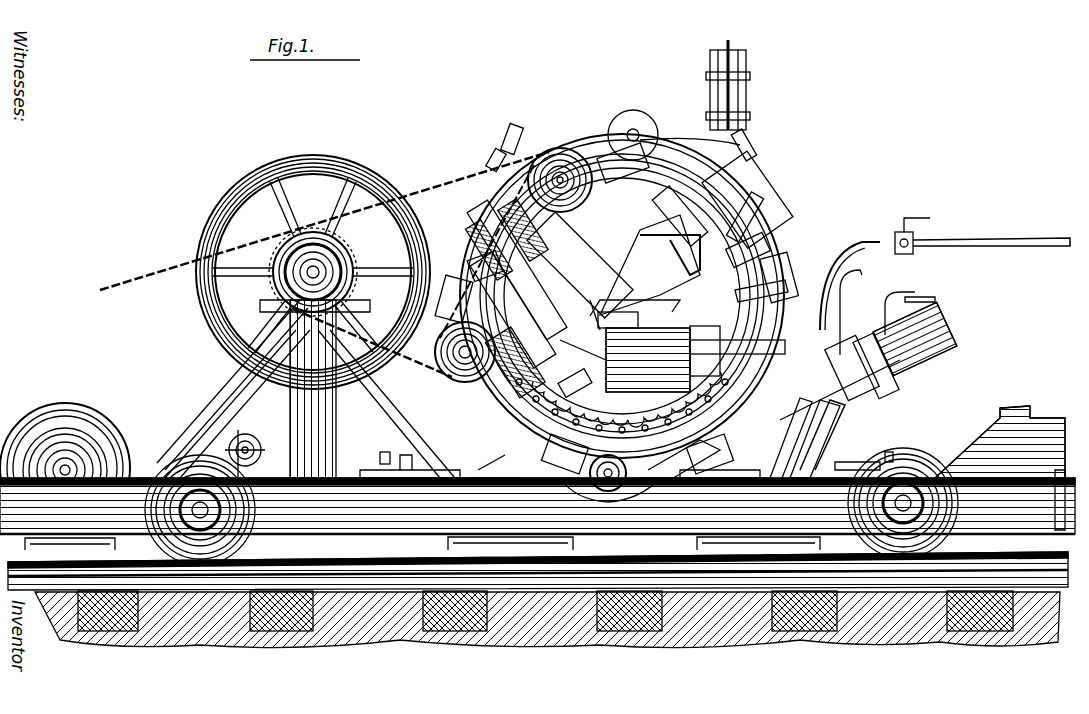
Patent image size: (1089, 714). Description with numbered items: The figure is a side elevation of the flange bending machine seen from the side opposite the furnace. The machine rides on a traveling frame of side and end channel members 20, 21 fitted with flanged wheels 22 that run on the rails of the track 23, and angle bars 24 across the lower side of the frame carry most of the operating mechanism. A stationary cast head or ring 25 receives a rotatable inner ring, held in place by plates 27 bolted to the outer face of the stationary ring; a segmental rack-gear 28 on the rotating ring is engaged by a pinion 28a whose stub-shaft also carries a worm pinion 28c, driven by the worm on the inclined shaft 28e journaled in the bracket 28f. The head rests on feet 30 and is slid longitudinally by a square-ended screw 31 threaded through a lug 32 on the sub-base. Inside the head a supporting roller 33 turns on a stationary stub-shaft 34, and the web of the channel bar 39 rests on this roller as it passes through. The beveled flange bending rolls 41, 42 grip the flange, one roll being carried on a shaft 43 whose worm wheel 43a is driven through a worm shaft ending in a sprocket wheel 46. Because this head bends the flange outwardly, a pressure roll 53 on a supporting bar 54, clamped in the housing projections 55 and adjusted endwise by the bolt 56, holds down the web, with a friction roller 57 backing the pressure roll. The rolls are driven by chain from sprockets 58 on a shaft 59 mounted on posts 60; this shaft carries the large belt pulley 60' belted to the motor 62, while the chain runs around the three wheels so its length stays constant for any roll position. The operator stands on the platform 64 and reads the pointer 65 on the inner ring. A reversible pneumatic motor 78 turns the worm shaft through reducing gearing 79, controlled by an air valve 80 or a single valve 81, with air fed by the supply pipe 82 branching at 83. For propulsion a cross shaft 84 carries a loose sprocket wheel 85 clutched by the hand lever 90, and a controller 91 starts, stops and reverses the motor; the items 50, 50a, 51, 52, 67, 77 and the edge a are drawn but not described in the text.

The side channel member 20 is at (537, 506).
The end channel member 21 is at (538, 540).
The flanged wheel 22 is at (551, 506).
The track 23 is at (547, 607).
The angle bar 24 is at (519, 583).
The stationary head 25 is at (785, 240).
The plate 27 is at (655, 190).
The segmental rack-gear 28 is at (622, 311).
The pinion 28a is at (640, 495).
The worm pinion 28c is at (578, 485).
The inclined shaft 28e is at (596, 479).
The bracket 28f is at (805, 438).
The foot 30 is at (560, 486).
The adjusting screw 31 is at (428, 472).
The lug 32 is at (632, 440).
The supporting roller 33 is at (648, 360).
The stub-shaft 34 is at (737, 351).
The channel bar 39 is at (635, 318).
The flange bending roll 41 is at (589, 329).
The flange bending roll 42 is at (583, 360).
The roll shaft 43 is at (578, 262).
The worm wheel 43a is at (518, 165).
The sprocket wheel 46 is at (565, 148).
The rack 50 is at (506, 248).
The rack guide 50a is at (628, 163).
The rack bar 51 is at (524, 298).
The drive chain 52 is at (480, 190).
The pressure roll 53 is at (740, 240).
The supporting bar 54 is at (730, 235).
The housing projection 55 is at (552, 150).
The bolt 56 is at (518, 127).
The friction roller 57 is at (700, 238).
The sprocket 58 is at (316, 232).
The shaft 59 is at (352, 252).
The post 60 is at (310, 389).
The belt pulley 60' is at (313, 259).
The motor 62 is at (100, 412).
The operator's platform 64 is at (1005, 412).
The pointer 65 is at (765, 288).
The bracket 67 is at (738, 60).
The guide 77 is at (690, 130).
The pneumatic motor 78 is at (920, 338).
The reducing gearing 79 is at (815, 400).
The air valve 80 is at (890, 303).
The single valve 81 is at (915, 240).
The air supply pipe 82 is at (990, 240).
The branch pipe 83 is at (850, 250).
The cross shaft 84 is at (213, 412).
The loose sprocket wheel 85 is at (235, 438).
The hand lever 90 is at (933, 296).
The controller 91 is at (634, 120).
The edge a is at (1036, 385).